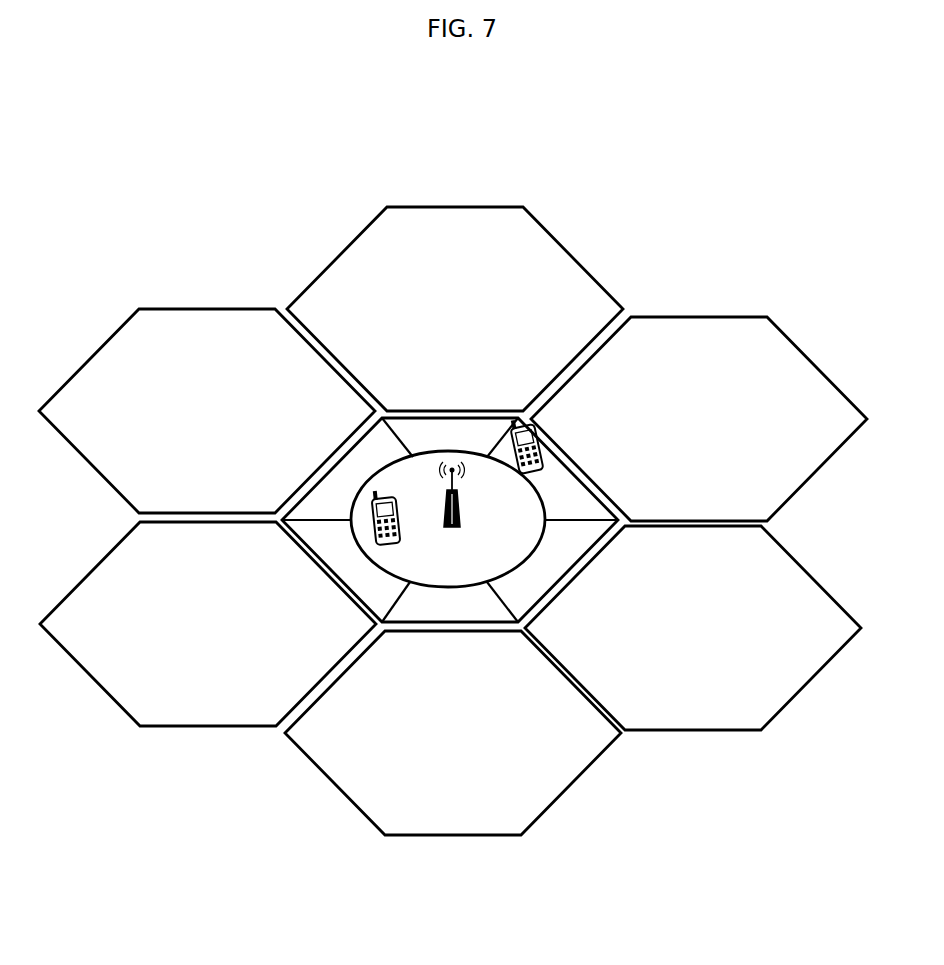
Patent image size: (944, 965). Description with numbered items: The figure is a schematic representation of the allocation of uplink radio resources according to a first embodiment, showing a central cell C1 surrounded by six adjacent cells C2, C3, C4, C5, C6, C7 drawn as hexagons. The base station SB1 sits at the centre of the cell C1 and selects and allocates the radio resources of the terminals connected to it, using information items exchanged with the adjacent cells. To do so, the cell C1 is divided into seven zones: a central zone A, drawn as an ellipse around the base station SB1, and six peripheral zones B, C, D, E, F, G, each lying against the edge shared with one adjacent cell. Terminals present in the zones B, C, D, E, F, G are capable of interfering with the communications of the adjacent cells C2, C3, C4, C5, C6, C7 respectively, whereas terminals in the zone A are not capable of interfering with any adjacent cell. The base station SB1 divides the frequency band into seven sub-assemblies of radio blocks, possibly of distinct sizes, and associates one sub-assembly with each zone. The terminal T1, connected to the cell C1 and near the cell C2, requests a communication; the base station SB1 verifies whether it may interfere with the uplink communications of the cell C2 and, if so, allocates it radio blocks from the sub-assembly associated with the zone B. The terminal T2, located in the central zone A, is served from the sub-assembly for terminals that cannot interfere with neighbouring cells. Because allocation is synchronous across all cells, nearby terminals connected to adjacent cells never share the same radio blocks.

The cell C1 is at (450, 514).
The adjacent cell C2 is at (699, 419).
The adjacent cell C3 is at (455, 309).
The adjacent cell C4 is at (207, 411).
The adjacent cell C5 is at (208, 624).
The adjacent cell C6 is at (453, 733).
The adjacent cell C7 is at (693, 628).
The base station SB1 is at (456, 528).
The terminal T1 is at (540, 440).
The terminal T2 is at (400, 533).
The zone A is at (521, 517).
The zone B is at (531, 462).
The zone C is at (423, 437).
The zone D is at (321, 487).
The zone E is at (375, 584).
The zone F is at (482, 602).
The zone G is at (581, 544).